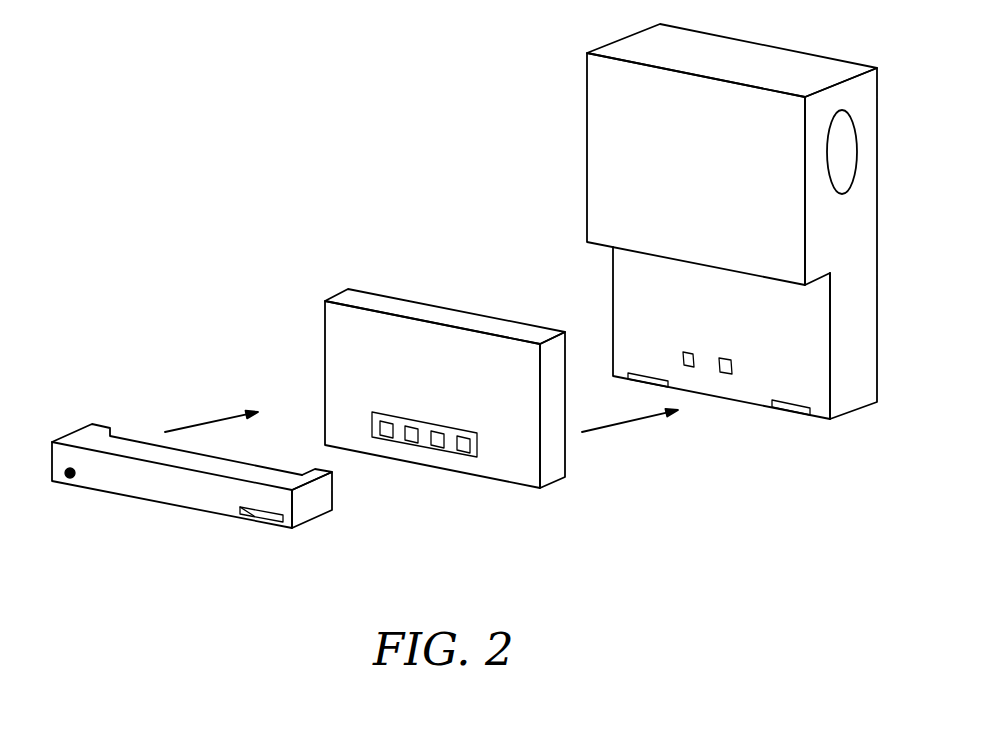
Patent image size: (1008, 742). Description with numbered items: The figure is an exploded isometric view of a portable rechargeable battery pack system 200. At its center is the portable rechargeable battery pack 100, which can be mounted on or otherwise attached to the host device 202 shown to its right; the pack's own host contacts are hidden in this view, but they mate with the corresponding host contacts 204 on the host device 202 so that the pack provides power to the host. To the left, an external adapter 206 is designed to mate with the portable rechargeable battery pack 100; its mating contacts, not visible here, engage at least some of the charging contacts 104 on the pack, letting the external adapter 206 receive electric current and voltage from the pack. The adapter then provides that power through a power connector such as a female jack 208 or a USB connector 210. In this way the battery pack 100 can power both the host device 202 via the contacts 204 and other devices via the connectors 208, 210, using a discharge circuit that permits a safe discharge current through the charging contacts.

The portable rechargeable battery pack system 200 is at (194, 70).
The host device 202 is at (587, 132).
The host contacts 204 is at (690, 352).
The portable rechargeable battery pack 100 is at (323, 306).
The charging contacts 104 is at (425, 447).
The external adapter 206 is at (84, 428).
The female jack 208 is at (70, 478).
The USB connector 210 is at (265, 522).